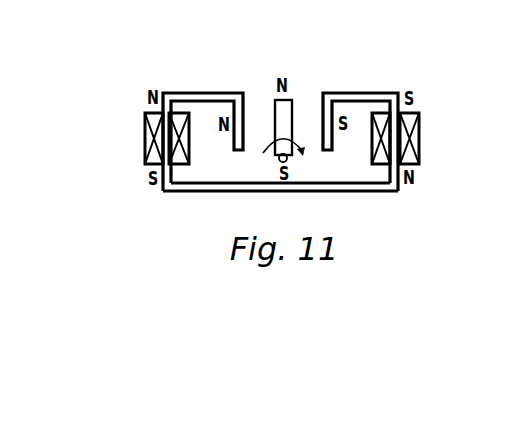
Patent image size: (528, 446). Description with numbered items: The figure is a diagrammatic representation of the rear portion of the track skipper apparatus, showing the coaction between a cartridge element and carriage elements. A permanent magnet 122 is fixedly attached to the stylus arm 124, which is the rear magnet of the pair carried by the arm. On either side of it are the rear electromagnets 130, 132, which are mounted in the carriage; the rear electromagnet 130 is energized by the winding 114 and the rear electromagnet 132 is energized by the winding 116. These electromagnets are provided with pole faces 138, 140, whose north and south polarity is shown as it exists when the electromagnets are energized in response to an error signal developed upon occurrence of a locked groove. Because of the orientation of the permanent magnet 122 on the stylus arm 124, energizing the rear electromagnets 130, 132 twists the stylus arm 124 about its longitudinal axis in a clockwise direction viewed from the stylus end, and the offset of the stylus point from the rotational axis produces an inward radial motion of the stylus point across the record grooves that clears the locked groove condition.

The winding 114 is at (145, 135).
The winding 116 is at (422, 135).
The permanent magnet 122 is at (294, 104).
The stylus arm 124 is at (287, 158).
The rear electromagnet 130 is at (208, 86).
The rear electromagnet 132 is at (379, 85).
The pole face 138 is at (244, 141).
The pole face 140 is at (323, 141).